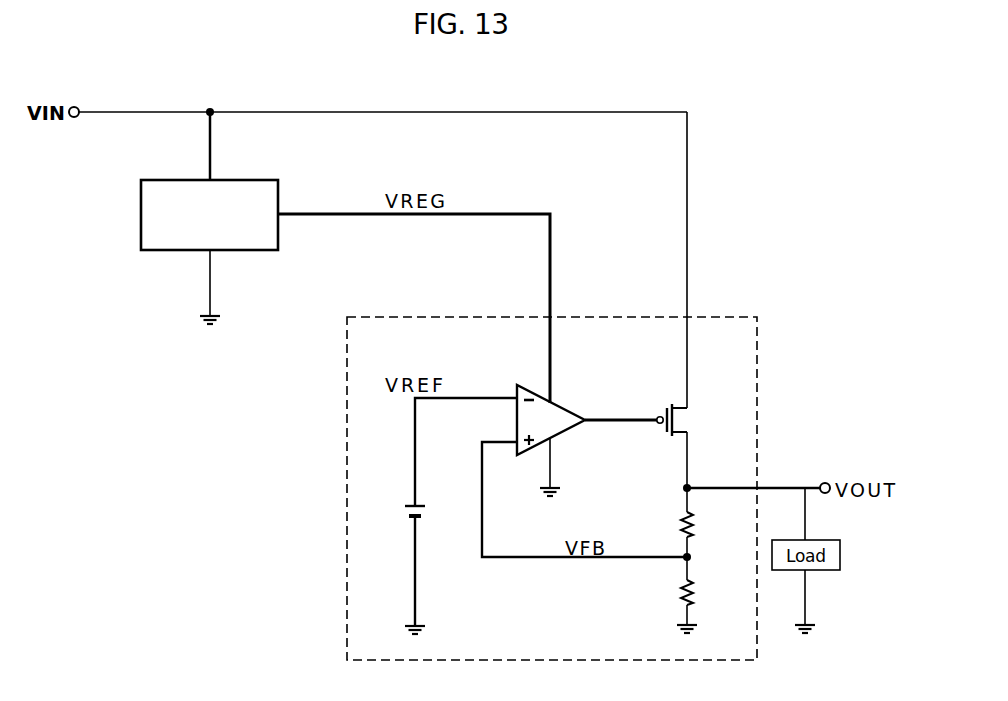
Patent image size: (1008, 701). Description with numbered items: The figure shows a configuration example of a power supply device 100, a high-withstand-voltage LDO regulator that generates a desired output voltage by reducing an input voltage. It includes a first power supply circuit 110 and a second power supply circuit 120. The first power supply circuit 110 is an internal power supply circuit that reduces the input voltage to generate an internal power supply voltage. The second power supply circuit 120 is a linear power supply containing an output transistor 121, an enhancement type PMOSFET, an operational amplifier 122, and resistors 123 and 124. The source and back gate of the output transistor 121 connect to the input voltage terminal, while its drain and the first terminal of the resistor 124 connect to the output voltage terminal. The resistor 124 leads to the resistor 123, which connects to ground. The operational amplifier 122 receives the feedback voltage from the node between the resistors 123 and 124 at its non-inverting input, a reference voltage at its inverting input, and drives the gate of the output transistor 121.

The power supply device 100 is at (822, 108).
The first power supply circuit 110 is at (247, 180).
The second power supply circuit 120 is at (618, 317).
The output transistor 121 is at (699, 300).
The operational amplifier 122 is at (576, 395).
The resistor 123 is at (712, 595).
The resistor 124 is at (714, 522).